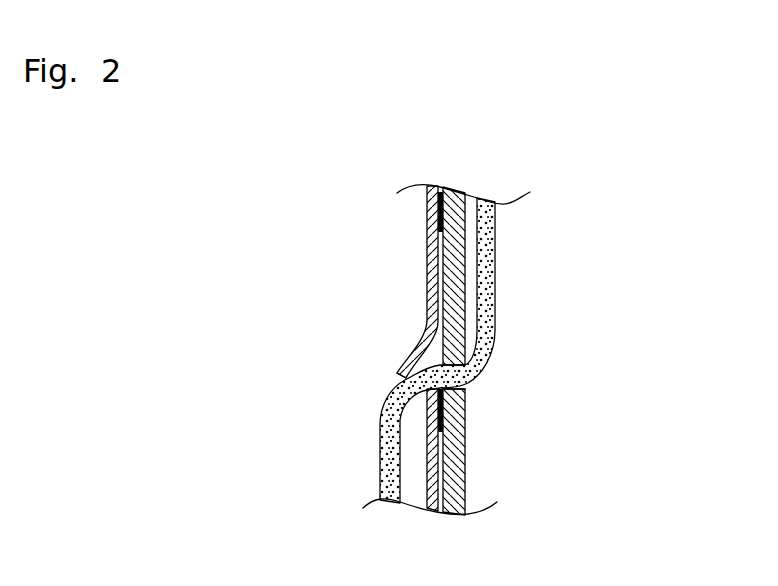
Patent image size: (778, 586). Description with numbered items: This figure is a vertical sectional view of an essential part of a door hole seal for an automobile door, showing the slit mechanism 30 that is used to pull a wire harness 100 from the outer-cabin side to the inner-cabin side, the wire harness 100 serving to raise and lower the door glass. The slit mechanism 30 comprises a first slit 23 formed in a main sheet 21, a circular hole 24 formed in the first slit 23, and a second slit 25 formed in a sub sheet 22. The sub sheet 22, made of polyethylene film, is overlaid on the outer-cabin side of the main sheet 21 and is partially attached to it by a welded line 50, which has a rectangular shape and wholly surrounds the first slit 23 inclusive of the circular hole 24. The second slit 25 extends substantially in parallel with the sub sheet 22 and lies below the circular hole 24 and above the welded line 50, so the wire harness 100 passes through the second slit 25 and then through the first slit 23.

The main sheet 21 is at (452, 207).
The sub sheet 22 is at (427, 273).
The first slit 23 is at (452, 362).
The circular hole 24 is at (466, 409).
The second slit 25 is at (398, 386).
The slit mechanism 30 is at (506, 367).
The welded line 50 is at (465, 224).
The wire harness 100 is at (497, 260).